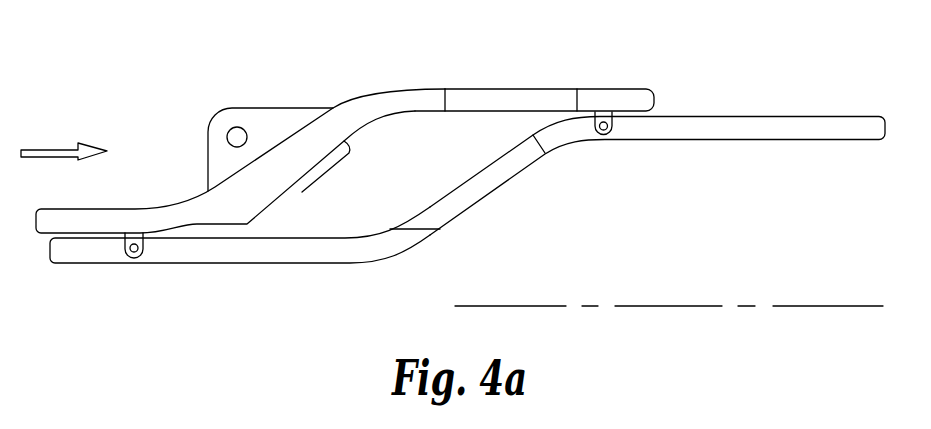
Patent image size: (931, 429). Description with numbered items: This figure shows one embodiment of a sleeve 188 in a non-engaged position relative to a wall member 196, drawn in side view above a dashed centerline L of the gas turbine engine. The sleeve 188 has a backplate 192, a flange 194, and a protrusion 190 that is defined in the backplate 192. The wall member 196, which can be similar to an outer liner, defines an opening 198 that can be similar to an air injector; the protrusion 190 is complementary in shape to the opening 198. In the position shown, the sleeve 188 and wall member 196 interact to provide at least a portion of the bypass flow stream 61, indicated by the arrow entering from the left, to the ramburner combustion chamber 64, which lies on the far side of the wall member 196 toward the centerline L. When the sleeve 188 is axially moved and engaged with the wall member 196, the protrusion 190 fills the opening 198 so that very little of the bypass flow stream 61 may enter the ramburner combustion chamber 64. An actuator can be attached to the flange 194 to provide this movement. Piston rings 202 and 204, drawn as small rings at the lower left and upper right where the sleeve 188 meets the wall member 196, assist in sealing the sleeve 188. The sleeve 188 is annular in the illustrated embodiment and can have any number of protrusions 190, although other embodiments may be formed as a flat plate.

The bypass flow stream 61 is at (50, 148).
The ramburner combustion chamber 64 is at (712, 250).
The sleeve 188 is at (437, 88).
The protrusion 190 is at (302, 192).
The backplate 192 is at (200, 193).
The flange 194 is at (268, 108).
The wall member 196 is at (400, 254).
The opening 198 is at (495, 178).
The piston ring 202 is at (128, 242).
The piston ring 204 is at (602, 121).
The centerline L is at (792, 305).